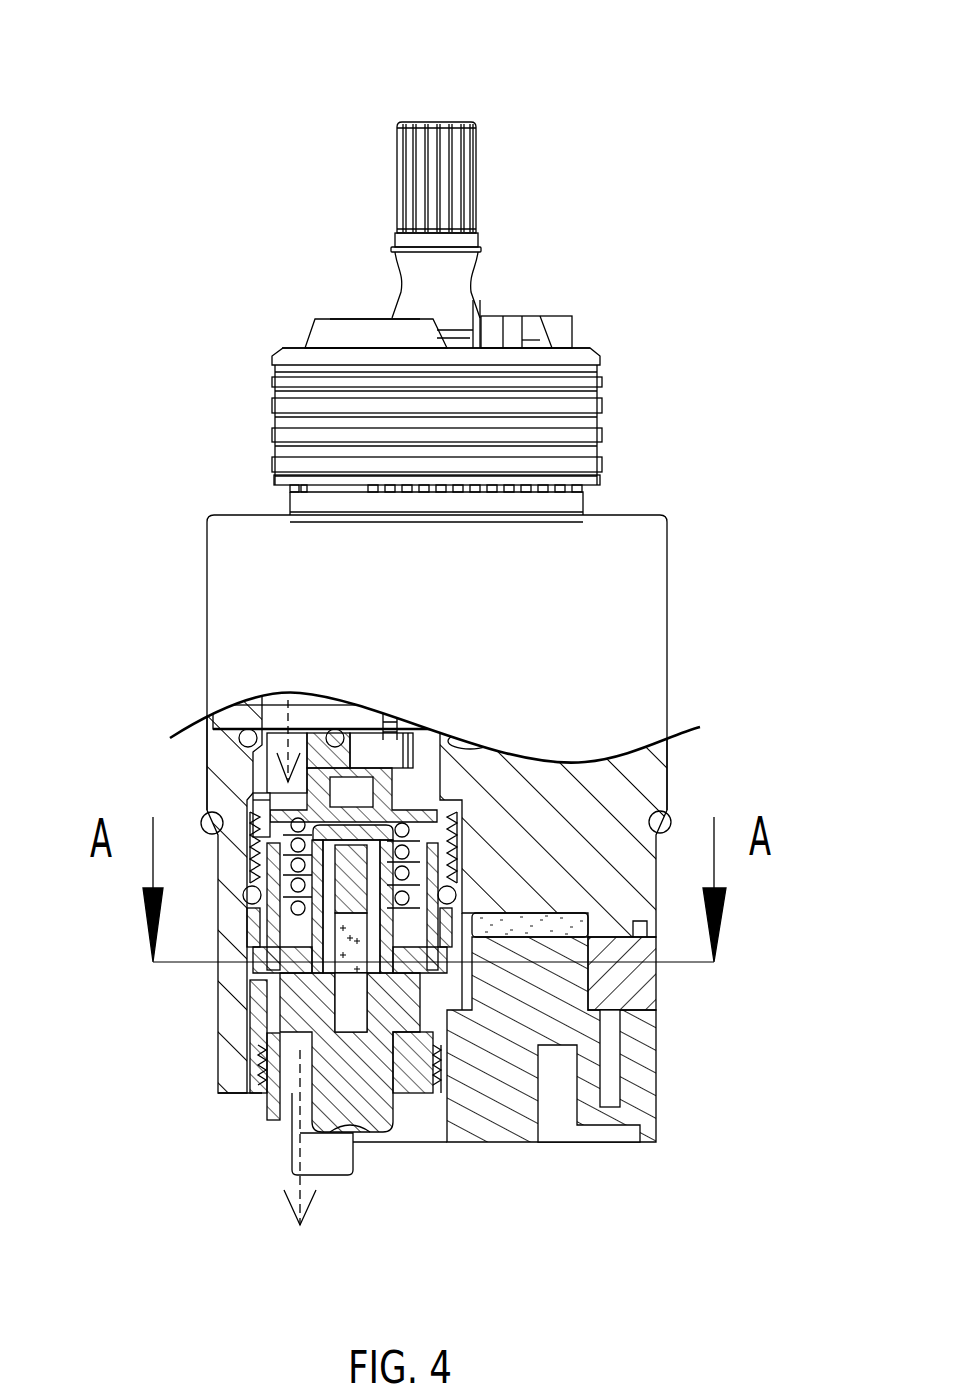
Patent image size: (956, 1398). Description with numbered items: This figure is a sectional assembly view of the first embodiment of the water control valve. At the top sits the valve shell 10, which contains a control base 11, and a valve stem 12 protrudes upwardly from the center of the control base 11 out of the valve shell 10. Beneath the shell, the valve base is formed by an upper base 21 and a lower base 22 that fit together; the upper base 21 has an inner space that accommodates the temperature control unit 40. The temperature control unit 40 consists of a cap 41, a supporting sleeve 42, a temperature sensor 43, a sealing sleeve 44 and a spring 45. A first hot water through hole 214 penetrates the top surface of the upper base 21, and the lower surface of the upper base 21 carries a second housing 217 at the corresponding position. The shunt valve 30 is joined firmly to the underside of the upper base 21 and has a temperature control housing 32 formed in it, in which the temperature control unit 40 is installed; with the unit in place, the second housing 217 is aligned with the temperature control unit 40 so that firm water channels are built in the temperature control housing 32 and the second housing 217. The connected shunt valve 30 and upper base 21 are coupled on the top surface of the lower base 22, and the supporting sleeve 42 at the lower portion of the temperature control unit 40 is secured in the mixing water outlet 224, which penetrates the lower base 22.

The valve shell 10 is at (229, 510).
The control base 11 is at (477, 312).
The valve stem 12 is at (409, 133).
The upper base 21 is at (638, 784).
The lower base 22 is at (640, 1116).
The first hot water through hole 214 is at (278, 737).
The second housing 217 is at (260, 800).
The mixing water outlet 224 is at (262, 1072).
The shunt valve 30 is at (640, 978).
The temperature control housing 32 is at (253, 947).
The temperature control unit 40 is at (418, 800).
The cap 41 is at (370, 767).
The supporting sleeve 42 is at (443, 1083).
The temperature sensor 43 is at (293, 1005).
The sealing sleeve 44 is at (235, 838).
The spring 45 is at (292, 888).